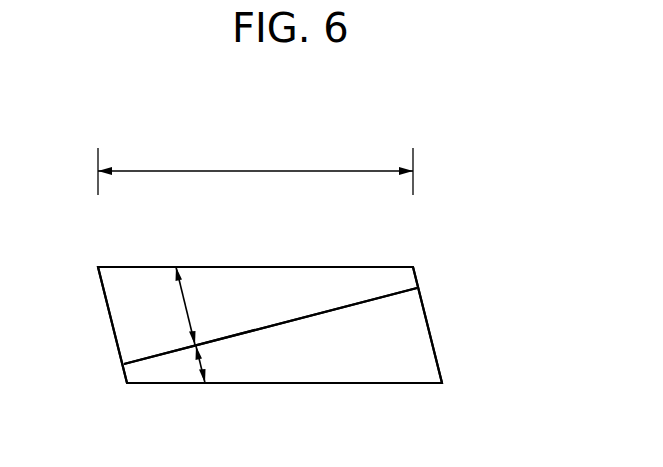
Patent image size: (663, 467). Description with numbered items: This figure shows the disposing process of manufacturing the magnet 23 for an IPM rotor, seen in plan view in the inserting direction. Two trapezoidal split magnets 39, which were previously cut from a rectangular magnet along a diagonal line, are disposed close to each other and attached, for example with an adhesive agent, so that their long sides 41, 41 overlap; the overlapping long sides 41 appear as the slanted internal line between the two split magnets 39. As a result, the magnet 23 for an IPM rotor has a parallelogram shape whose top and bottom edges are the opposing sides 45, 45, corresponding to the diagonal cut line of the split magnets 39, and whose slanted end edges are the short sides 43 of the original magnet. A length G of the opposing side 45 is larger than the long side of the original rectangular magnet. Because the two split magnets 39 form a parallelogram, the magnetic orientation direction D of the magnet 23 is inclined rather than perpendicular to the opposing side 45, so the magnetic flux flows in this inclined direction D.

The magnet for an IPM rotor 23 is at (533, 258).
The split magnet 39 is at (403, 282).
The long side 41 is at (265, 332).
The short side 43 is at (112, 317).
The opposing side 45 is at (312, 267).
The length of the opposing side G is at (260, 171).
The magnetic orientation direction D is at (186, 302).